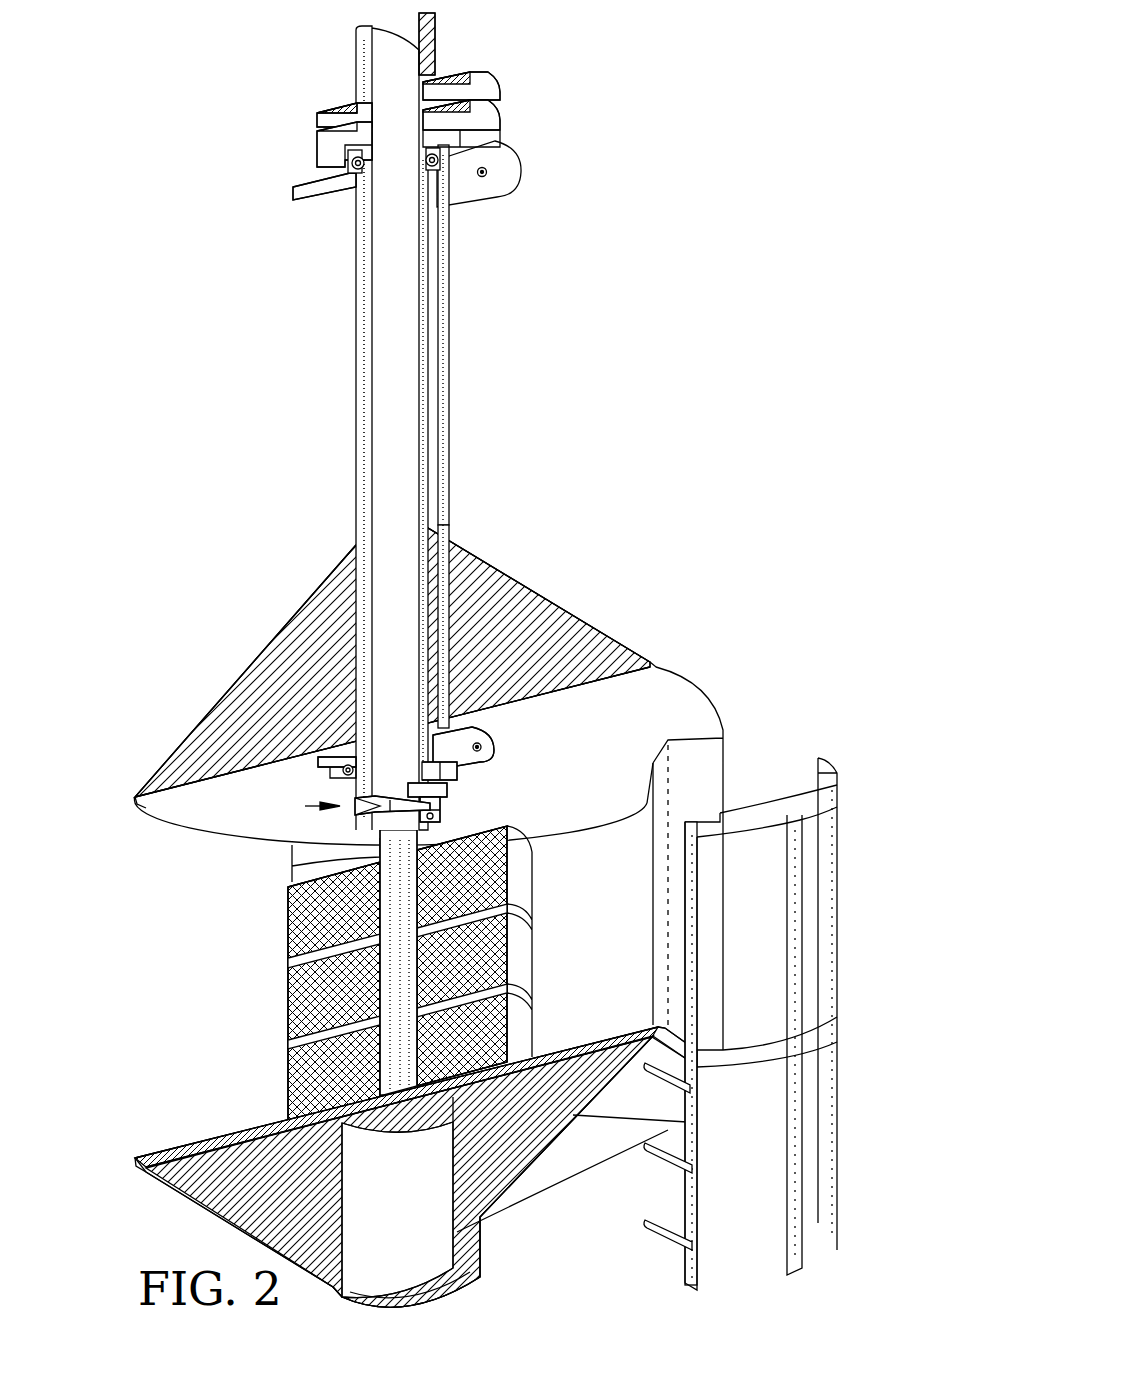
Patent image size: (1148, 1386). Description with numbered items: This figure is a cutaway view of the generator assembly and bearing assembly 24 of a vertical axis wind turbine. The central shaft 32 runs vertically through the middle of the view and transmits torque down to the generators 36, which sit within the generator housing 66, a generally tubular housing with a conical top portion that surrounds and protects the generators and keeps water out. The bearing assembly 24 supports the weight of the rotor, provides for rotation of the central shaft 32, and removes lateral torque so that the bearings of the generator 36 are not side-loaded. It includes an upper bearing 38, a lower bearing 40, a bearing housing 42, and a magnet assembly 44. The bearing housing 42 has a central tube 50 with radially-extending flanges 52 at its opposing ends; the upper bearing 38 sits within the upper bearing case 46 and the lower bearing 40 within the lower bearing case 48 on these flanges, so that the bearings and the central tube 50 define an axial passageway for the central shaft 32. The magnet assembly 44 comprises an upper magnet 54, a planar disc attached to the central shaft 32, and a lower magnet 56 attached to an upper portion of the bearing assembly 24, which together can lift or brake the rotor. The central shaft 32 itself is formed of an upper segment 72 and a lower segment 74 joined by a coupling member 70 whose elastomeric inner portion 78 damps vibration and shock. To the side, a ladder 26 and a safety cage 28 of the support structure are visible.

The bearing assembly 24 is at (552, 324).
The ladder 26 is at (670, 1228).
The safety cage 28 is at (832, 775).
The central shaft 32 is at (386, 355).
The generator 36 is at (288, 1065).
The upper bearing 38 is at (430, 158).
The lower bearing 40 is at (366, 767).
The bearing housing 42 is at (443, 233).
The magnet assembly 44 is at (401, 136).
The upper bearing case 46 is at (358, 172).
The lower bearing case 48 is at (472, 755).
The central tube 50 is at (447, 455).
The radially-extending flanges 52 is at (500, 180).
The upper magnet 54 is at (318, 122).
The lower magnet 56 is at (320, 143).
The generator housing 66 is at (128, 1112).
The coupling member 70 is at (307, 810).
The upper segment 72 is at (420, 787).
The lower segment 74 is at (297, 868).
The elastomeric inner portion 78 is at (442, 796).